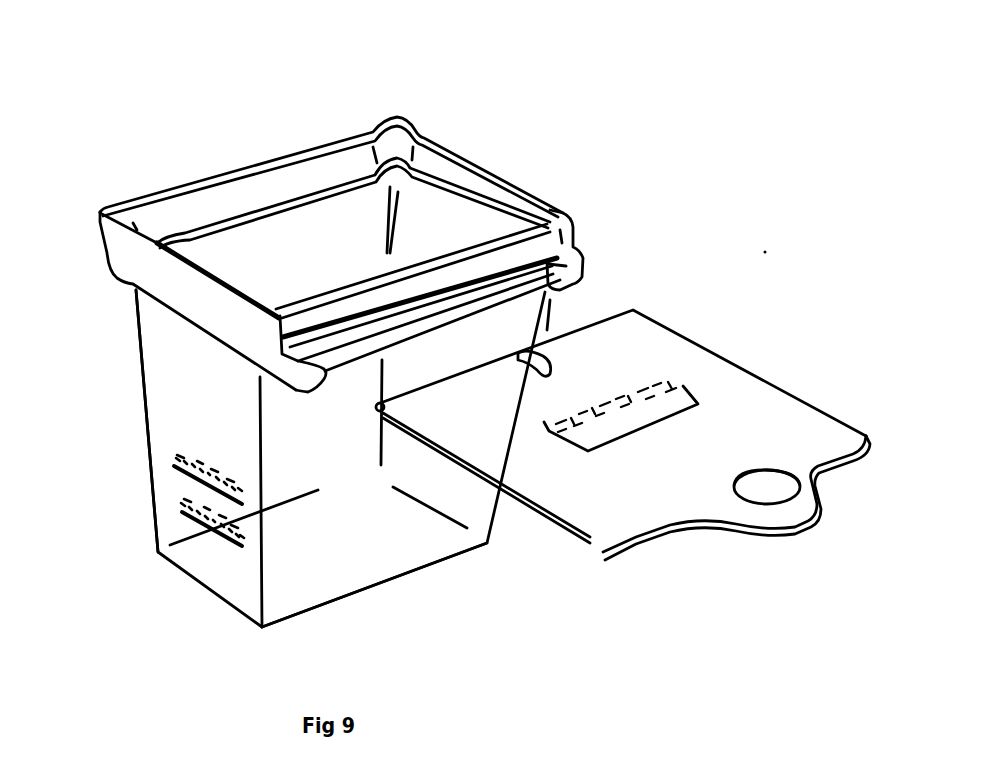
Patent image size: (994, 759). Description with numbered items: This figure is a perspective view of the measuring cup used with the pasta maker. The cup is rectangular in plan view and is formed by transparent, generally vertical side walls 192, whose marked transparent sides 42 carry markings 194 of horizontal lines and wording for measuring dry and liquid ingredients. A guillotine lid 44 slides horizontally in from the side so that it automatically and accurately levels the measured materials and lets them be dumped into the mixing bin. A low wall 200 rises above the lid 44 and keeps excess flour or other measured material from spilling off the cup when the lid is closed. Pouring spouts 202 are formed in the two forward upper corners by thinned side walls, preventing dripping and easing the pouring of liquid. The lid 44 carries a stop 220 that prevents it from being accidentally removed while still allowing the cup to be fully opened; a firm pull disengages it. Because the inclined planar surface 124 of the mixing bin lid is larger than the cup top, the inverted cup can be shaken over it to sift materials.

The marked transparent sides 42 is at (372, 577).
The guillotine lid 44 is at (693, 360).
The inclined planar surface 124 is at (313, 523).
The side walls 192 is at (272, 265).
The markings 194 is at (177, 468).
The low wall 200 is at (133, 278).
The pouring spouts 202 is at (100, 213).
The stop 220 is at (543, 353).